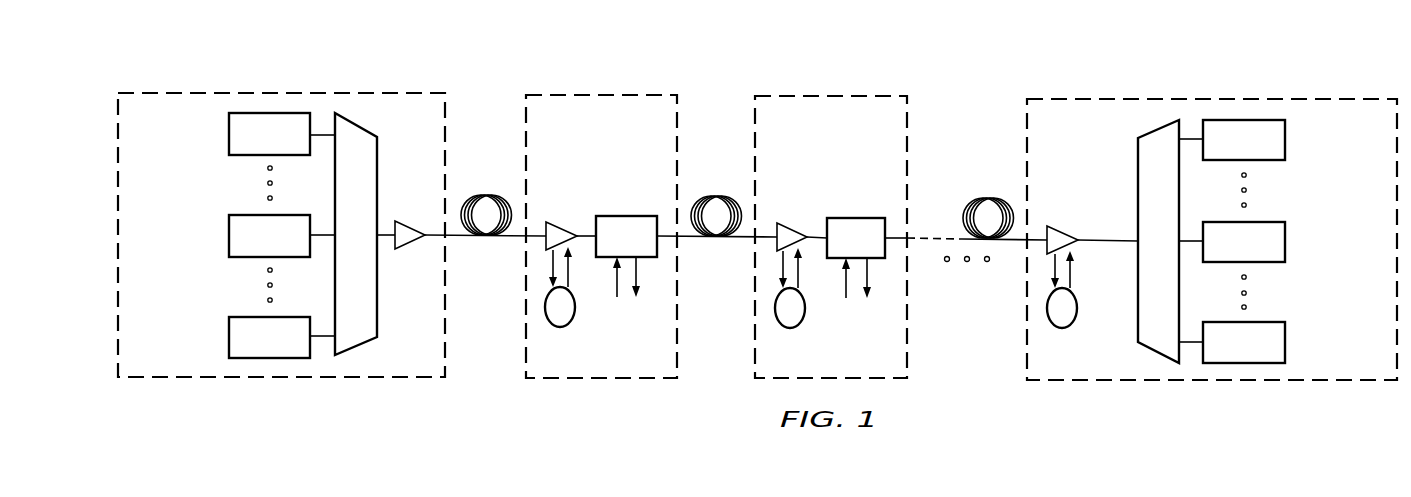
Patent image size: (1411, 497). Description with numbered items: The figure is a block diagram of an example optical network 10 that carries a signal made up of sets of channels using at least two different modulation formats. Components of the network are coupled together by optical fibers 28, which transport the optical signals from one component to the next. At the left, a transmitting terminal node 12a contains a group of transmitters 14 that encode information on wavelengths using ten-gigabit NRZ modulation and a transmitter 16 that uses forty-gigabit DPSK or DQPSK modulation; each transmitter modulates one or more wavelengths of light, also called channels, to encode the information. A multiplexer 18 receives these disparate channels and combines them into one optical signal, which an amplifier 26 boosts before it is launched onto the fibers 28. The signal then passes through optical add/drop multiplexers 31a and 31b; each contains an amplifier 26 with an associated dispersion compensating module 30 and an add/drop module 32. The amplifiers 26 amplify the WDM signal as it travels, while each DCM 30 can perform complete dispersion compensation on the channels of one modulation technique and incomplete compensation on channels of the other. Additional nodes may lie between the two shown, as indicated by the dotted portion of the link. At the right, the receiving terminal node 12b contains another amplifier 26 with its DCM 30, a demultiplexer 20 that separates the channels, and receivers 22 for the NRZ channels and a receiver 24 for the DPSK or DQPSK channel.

The optical network 10 is at (460, 73).
The terminal node 12a is at (251, 88).
The terminal node 12b is at (1245, 93).
The transmitter 14 is at (285, 156).
The transmitter 16 is at (252, 214).
The multiplexer 18 is at (377, 283).
The demultiplexer 20 is at (1137, 167).
The receiver 22 is at (1258, 161).
The receiver 24 is at (1228, 221).
The amplifier 26 is at (410, 222).
The optical fiber 28 is at (490, 196).
The optical dispersion compensating module 30 is at (575, 305).
The optical add/drop multiplexer 31a is at (600, 89).
The optical add/drop multiplexer 31b is at (836, 89).
The add/drop module 32 is at (625, 215).